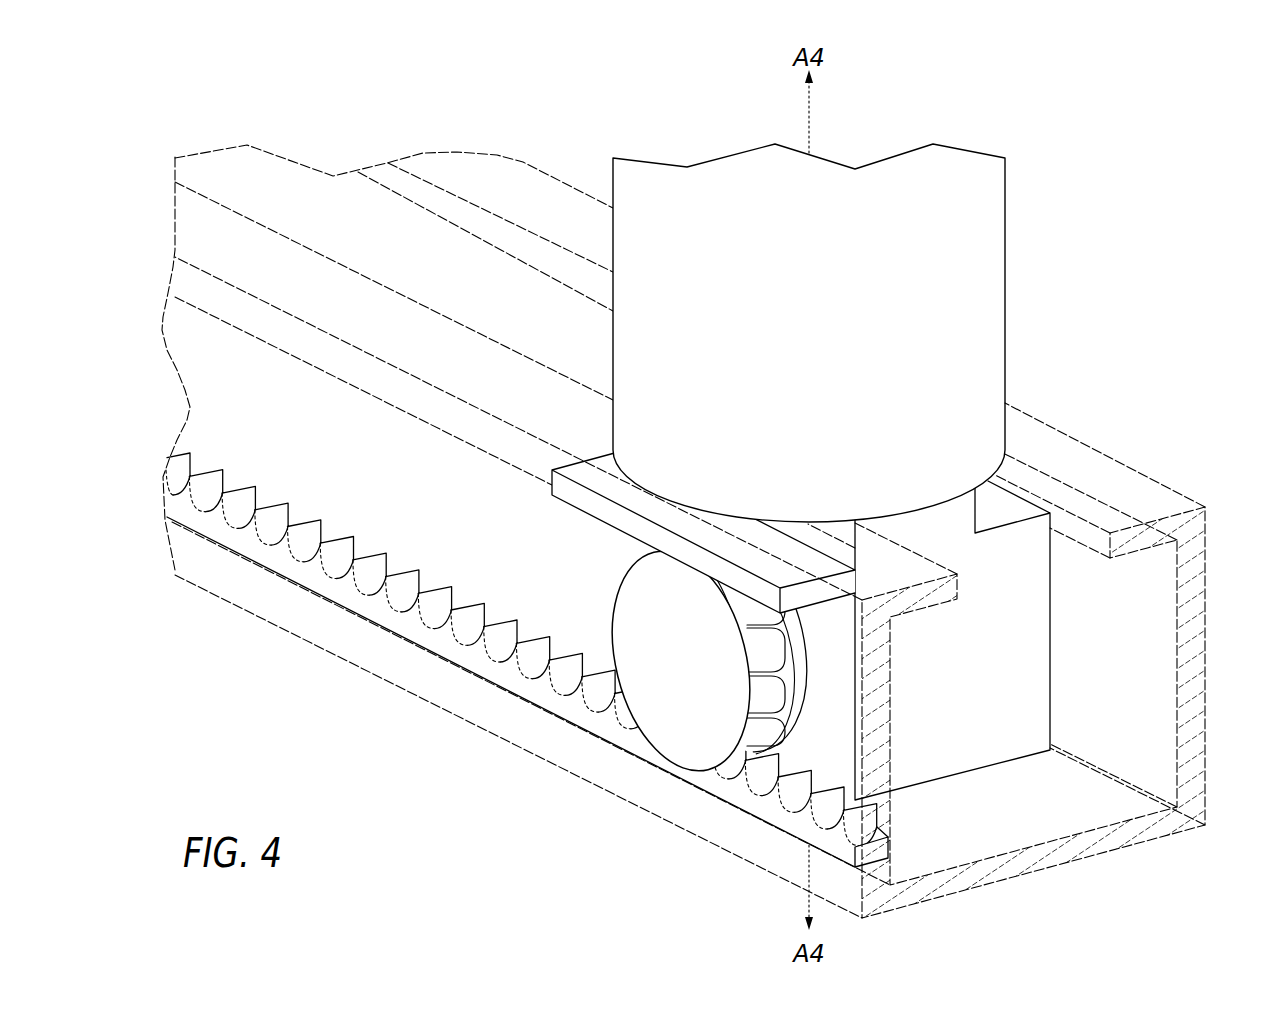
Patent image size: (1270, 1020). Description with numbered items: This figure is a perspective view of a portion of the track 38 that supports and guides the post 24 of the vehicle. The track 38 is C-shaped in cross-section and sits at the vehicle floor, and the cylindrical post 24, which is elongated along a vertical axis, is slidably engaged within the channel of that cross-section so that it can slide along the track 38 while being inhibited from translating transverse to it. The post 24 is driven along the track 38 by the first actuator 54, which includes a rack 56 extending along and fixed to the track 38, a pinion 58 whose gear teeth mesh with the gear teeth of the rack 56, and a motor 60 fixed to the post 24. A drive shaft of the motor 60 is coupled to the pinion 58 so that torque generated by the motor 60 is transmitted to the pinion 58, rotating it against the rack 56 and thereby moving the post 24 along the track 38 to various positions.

The post 24 is at (988, 262).
The track 38 is at (1140, 500).
The first actuator 54 is at (554, 617).
The rack 56 is at (483, 648).
The pinion 58 is at (693, 720).
The motor 60 is at (1007, 633).